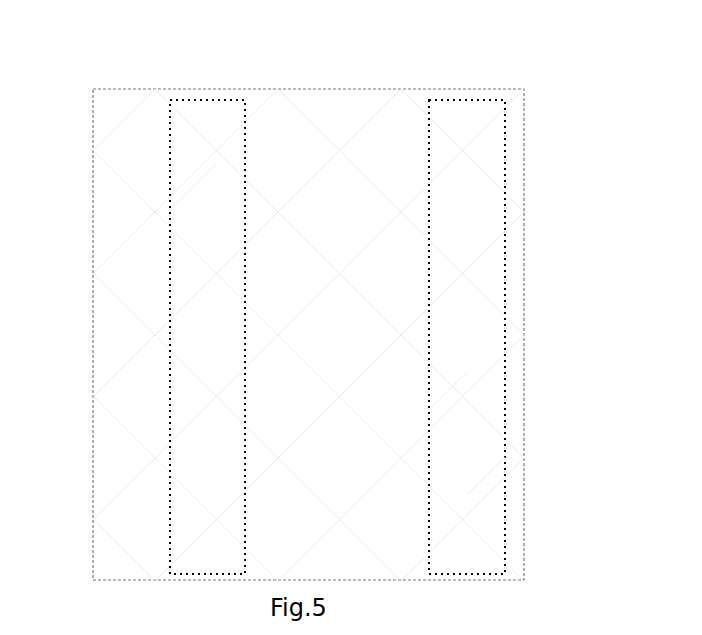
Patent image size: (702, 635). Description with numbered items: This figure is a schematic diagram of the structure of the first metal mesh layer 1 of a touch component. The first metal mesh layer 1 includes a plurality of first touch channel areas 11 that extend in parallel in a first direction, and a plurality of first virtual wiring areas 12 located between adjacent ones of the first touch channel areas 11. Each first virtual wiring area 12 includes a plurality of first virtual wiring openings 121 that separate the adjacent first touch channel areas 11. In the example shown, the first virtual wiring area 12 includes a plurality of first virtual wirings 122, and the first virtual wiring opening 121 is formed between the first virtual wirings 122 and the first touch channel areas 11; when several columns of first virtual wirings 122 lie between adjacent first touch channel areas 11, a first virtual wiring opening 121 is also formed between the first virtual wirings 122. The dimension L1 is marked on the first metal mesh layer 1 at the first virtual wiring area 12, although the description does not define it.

The first metal mesh layer 1 is at (351, 314).
The first touch channel area 11 is at (329, 197).
The first virtual wiring area 12 is at (172, 292).
The first virtual wiring opening 121 is at (492, 485).
The first virtual wiring 122 is at (462, 397).
The width of edge region L1 is at (163, 203).